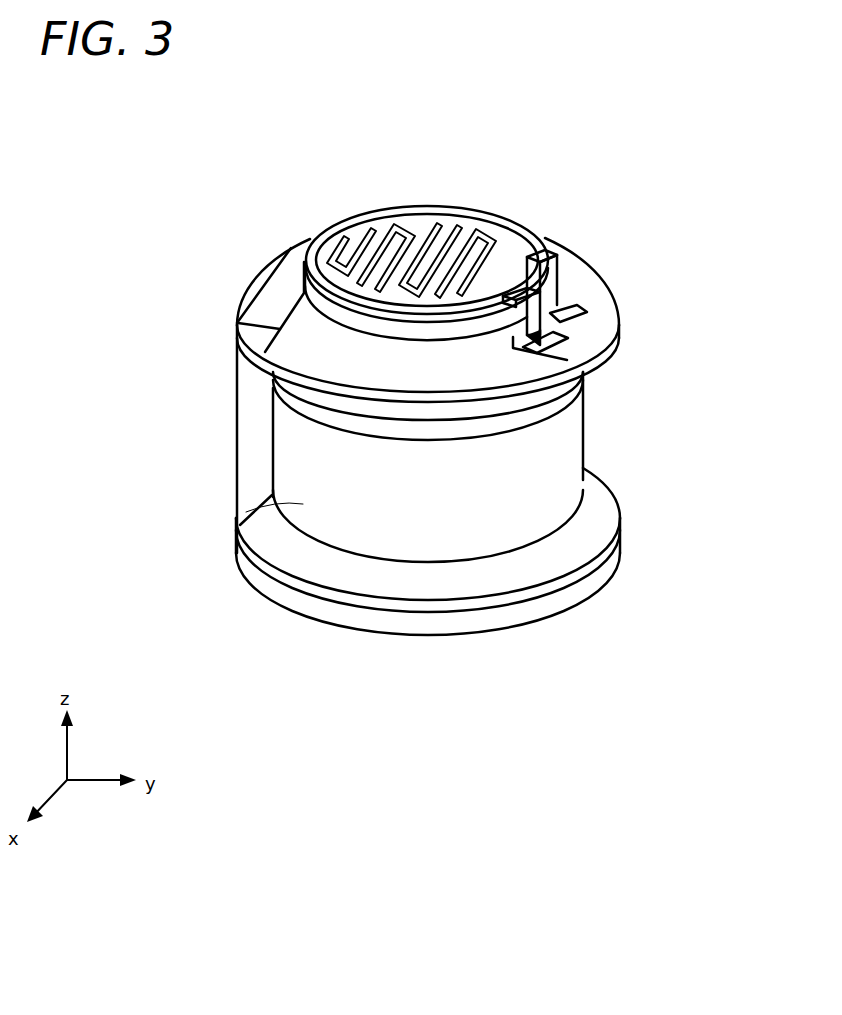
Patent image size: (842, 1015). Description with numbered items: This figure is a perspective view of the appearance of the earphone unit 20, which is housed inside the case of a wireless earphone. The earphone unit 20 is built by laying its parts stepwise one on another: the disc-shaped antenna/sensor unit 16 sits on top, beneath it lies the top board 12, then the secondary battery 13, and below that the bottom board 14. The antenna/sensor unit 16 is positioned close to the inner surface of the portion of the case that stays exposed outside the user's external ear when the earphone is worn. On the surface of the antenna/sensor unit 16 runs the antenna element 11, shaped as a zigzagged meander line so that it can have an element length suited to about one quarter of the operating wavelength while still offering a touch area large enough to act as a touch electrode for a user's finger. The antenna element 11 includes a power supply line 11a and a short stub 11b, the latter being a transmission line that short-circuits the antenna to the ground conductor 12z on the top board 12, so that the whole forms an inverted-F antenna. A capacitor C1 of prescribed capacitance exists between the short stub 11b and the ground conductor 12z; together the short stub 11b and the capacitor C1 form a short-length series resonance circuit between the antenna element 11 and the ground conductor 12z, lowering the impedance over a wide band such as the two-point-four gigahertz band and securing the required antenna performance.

The earphone unit 20 is at (185, 462).
The antenna element 11 is at (403, 223).
The antenna/sensor unit 16 is at (467, 220).
The power supply line 11a is at (560, 280).
The short stub 11b is at (587, 328).
The top board 12 is at (610, 310).
The ground conductor 12z is at (240, 338).
The capacitor C1 is at (567, 357).
The secondary battery 13 is at (270, 500).
The bottom board 14 is at (612, 517).